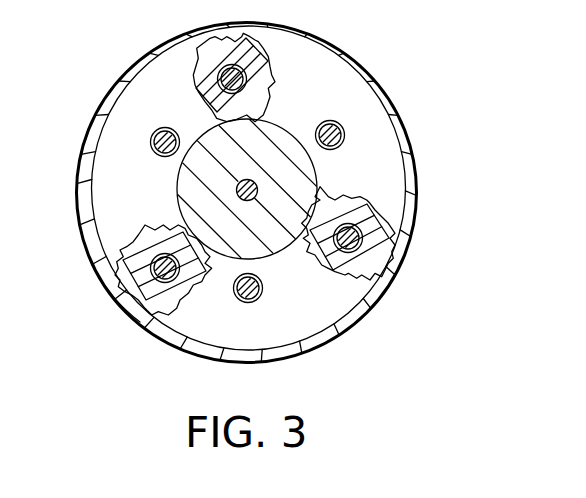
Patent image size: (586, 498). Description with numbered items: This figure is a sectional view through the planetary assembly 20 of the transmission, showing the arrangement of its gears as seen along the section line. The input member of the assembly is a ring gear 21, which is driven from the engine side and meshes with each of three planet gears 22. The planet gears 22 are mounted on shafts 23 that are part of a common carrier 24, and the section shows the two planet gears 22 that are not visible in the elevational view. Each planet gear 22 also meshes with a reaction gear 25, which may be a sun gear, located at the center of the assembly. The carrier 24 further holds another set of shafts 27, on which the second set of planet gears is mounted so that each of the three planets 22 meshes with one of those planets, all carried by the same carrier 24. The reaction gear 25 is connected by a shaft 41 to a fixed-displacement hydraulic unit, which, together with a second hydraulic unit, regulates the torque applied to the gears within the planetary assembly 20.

The planetary assembly 20 is at (432, 149).
The ring gear 21 is at (136, 302).
The planet gear 22 is at (195, 68).
The shaft 23 is at (246, 79).
The carrier 24 is at (140, 80).
The reaction gear 25 is at (283, 142).
The shaft 27 is at (152, 146).
The shaft 41 is at (250, 168).